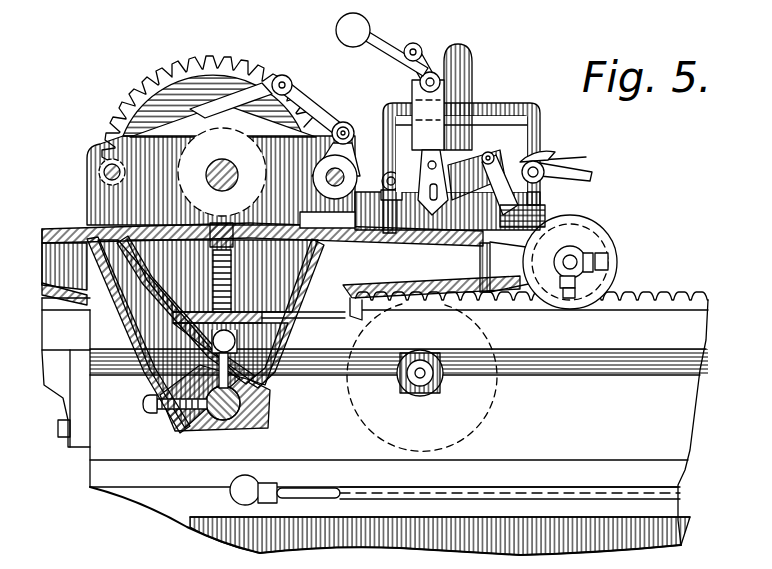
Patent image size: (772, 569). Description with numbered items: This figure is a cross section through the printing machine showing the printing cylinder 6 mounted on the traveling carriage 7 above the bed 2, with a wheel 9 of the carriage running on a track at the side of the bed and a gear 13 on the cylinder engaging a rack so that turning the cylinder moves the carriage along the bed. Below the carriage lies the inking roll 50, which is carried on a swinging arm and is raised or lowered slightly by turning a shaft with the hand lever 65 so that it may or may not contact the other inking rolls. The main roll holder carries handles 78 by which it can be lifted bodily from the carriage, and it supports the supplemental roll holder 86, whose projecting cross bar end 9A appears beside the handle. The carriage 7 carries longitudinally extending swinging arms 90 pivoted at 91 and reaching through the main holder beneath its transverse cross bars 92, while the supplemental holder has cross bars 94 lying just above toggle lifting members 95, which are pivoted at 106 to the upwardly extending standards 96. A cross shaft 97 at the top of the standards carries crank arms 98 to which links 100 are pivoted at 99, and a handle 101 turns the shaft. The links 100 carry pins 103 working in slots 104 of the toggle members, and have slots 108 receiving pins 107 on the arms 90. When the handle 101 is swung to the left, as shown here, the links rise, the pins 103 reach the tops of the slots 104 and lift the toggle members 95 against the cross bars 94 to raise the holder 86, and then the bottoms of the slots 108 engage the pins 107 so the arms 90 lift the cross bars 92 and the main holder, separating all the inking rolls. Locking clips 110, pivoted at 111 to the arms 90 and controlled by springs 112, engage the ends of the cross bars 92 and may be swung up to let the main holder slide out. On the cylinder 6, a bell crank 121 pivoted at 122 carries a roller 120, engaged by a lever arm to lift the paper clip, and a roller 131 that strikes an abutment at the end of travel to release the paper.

The bed 2 is at (676, 297).
The printing cylinder 6 is at (208, 72).
The traveling carriage 7 is at (50, 262).
The wheel 9 is at (592, 235).
The frame bar 9A is at (510, 112).
The gear 13 is at (634, 296).
The inking roll 50 is at (487, 336).
The hand lever 65 is at (302, 491).
The handle 78 is at (502, 100).
The supplemental roll holder 86 is at (492, 157).
The swinging arm 90 is at (572, 178).
The pivot 91 is at (125, 212).
The cross bar 92 is at (546, 174).
The cross bar 94 is at (382, 163).
The toggle lifting member 95 is at (460, 182).
The standard 96 is at (458, 100).
The cross shaft 97 is at (441, 78).
The crank arm 98 is at (422, 50).
The pivot 99 is at (416, 44).
The link 100 is at (446, 87).
The handle 101 is at (380, 46).
The pin 103 is at (446, 168).
The slot 104 is at (374, 284).
The pivot 106 is at (420, 158).
The pin 107 is at (398, 292).
The slot 108 is at (432, 188).
The locking clip 110 is at (536, 160).
The pivot 111 is at (560, 203).
The spring 112 is at (518, 224).
The roller 120 is at (183, 108).
The bell crank 121 is at (280, 76).
The pivot 122 is at (290, 83).
The roller 131 is at (372, 140).